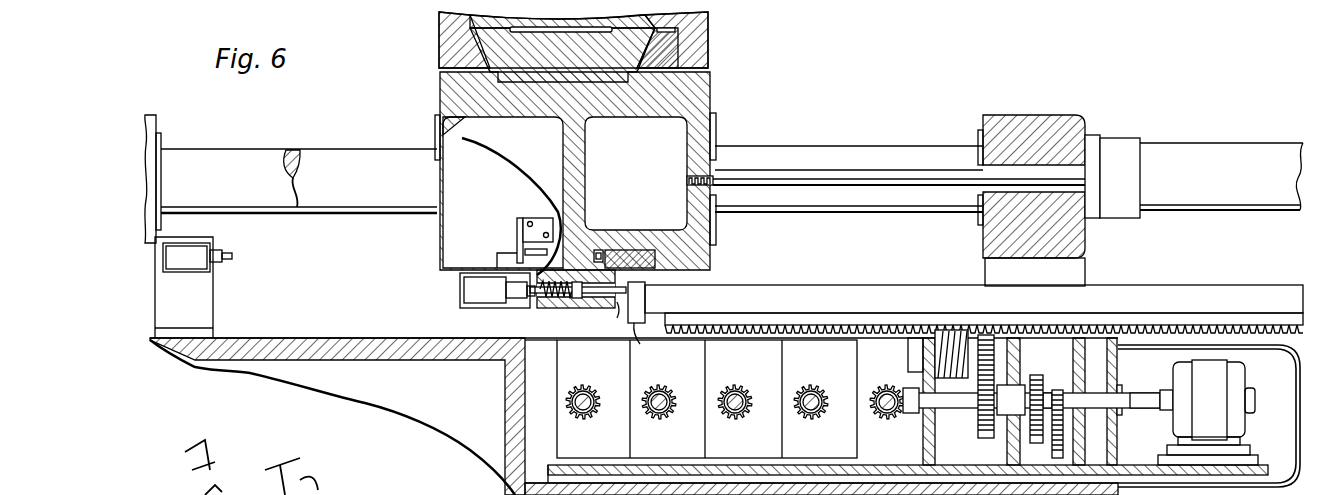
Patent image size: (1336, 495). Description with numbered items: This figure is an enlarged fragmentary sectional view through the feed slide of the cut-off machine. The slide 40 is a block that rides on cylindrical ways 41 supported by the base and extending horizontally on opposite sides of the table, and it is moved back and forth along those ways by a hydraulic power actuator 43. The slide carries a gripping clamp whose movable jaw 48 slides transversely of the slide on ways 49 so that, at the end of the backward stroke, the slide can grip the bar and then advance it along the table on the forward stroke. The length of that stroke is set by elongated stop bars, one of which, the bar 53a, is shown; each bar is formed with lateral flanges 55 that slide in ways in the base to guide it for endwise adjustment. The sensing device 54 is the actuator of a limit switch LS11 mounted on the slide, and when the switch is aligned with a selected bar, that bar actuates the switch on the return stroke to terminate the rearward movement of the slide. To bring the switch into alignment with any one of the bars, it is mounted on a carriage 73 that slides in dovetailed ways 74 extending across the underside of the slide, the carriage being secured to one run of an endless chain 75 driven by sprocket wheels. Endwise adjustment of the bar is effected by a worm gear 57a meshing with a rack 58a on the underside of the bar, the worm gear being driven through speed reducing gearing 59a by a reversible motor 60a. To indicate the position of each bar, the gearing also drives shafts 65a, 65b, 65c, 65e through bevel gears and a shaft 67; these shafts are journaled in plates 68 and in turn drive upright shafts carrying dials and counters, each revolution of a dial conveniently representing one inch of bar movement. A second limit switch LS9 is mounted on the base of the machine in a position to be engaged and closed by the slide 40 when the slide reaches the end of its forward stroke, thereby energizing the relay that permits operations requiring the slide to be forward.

The slide 40 is at (700, 96).
The cylindrical ways 41 is at (278, 155).
The hydraulic power actuator 43 is at (1245, 147).
The movable jaw 48 is at (705, 41).
The ways 49 is at (470, 32).
The stop bar 53a is at (654, 344).
The sensing device 54 is at (617, 310).
The lateral flanges 55 is at (974, 299).
The worm gear 57a is at (953, 330).
The rack 58a is at (790, 333).
The speed reducing gearing 59a is at (1053, 376).
The reversible motor 60a is at (1178, 380).
The shaft 65a is at (672, 386).
The shaft 65b is at (824, 380).
The shaft 65c is at (748, 384).
The shaft 65e is at (597, 386).
The shaft 67 is at (961, 409).
The plates 68 is at (563, 437).
The carriage 73 is at (555, 301).
The dovetailed ways 74 is at (620, 250).
The endless chain 75 is at (598, 250).
The limit switch LS9 is at (205, 272).
The limit switch LS11 is at (478, 291).